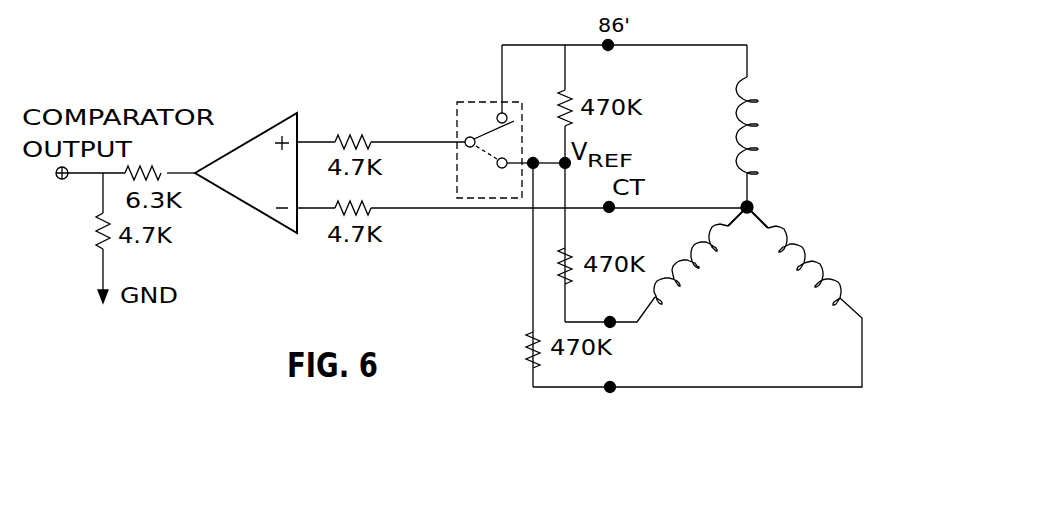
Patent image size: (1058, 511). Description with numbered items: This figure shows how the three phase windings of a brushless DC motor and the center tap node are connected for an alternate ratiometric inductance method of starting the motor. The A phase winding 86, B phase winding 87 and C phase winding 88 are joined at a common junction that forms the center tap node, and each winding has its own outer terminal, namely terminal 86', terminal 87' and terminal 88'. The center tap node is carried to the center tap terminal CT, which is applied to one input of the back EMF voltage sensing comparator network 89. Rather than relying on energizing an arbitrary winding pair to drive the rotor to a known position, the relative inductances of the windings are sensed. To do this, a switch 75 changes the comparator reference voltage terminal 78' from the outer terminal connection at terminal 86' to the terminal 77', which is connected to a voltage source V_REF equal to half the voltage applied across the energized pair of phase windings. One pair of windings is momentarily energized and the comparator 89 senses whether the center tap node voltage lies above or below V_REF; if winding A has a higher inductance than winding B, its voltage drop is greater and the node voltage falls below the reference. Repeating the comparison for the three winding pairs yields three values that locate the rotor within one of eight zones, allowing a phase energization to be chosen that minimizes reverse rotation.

The switch 75 is at (492, 128).
The comparator reference voltage terminal 78' is at (446, 130).
The terminal 86' is at (518, 84).
The terminal 77' is at (508, 178).
The comparator network 89 is at (275, 187).
The A phase winding 86 is at (772, 126).
The B phase winding 87 is at (691, 275).
The C phase winding 88 is at (804, 273).
The terminal 87' is at (610, 308).
The terminal 88' is at (697, 345).